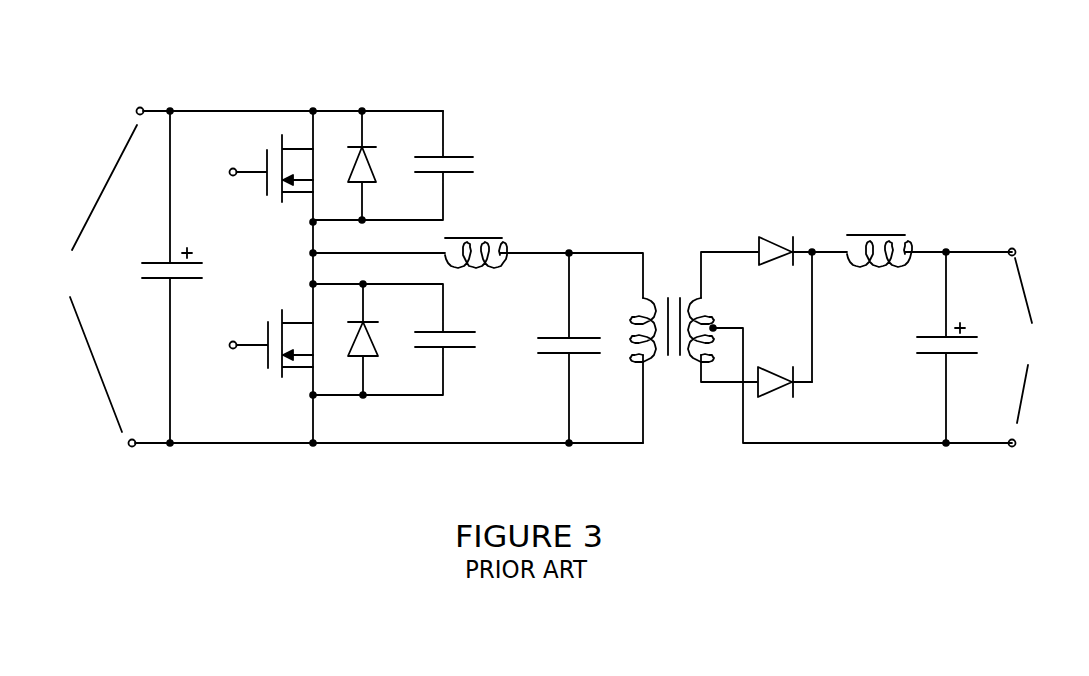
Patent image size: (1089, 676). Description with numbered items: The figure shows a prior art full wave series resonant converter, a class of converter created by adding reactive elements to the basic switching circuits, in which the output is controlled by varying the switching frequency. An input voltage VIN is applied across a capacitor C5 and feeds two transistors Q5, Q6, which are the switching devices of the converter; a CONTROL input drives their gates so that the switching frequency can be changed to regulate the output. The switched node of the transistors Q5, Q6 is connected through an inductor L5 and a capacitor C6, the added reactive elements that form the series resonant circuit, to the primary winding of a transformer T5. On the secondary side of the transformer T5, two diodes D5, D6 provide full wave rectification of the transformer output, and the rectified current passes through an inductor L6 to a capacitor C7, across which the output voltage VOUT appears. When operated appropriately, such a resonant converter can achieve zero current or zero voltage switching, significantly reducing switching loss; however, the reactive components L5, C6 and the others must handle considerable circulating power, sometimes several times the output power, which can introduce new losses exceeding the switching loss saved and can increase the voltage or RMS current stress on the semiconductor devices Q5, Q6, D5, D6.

The capacitor C5 is at (155, 267).
The transistor Q5 is at (272, 163).
The transistor Q6 is at (272, 335).
The inductor L5 is at (476, 237).
The capacitor C6 is at (564, 348).
The transformer T5 is at (667, 290).
The diode D5 is at (785, 265).
The diode D6 is at (785, 395).
The inductor L6 is at (912, 235).
The capacitor C7 is at (932, 347).
The input voltage VIN is at (95, 278).
The output voltage VOUT is at (1048, 340).
The control input CONTROL is at (233, 330).